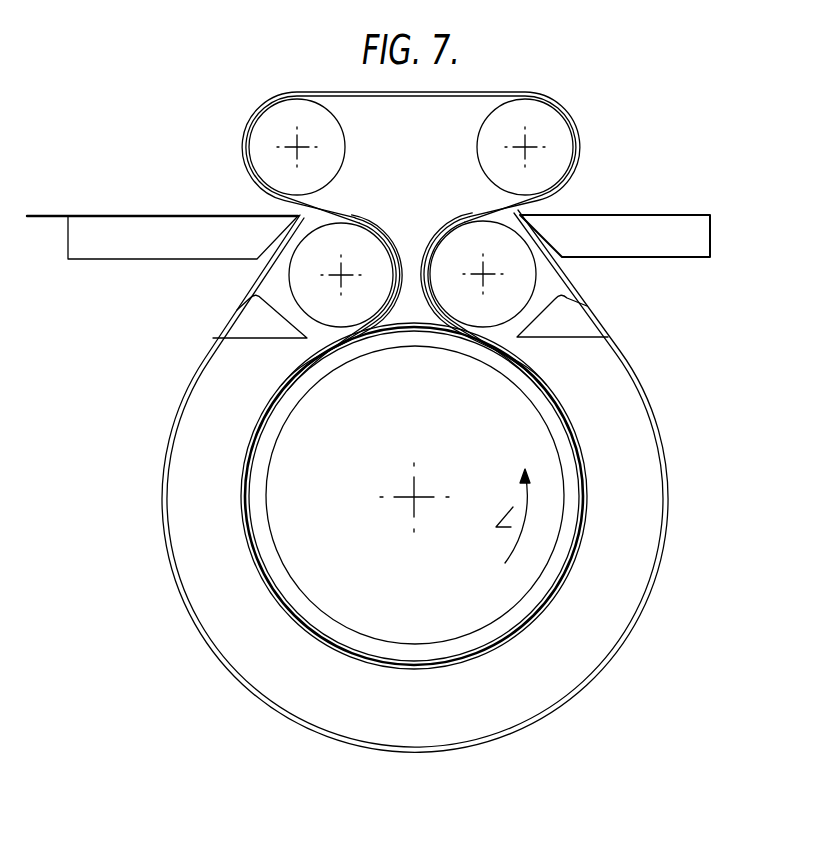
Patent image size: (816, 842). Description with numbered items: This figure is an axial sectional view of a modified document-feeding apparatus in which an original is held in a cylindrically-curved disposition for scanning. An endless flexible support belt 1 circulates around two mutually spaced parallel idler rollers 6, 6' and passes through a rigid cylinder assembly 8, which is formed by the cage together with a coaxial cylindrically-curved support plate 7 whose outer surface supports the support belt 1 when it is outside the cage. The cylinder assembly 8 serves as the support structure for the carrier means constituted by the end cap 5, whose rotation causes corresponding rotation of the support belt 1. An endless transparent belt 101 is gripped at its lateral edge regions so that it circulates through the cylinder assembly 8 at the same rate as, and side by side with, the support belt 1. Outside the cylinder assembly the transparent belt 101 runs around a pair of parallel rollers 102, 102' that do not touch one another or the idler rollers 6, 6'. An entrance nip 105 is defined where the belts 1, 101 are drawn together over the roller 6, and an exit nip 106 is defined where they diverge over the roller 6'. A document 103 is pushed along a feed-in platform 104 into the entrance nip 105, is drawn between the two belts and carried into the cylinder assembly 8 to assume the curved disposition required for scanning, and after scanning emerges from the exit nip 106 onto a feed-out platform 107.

The support belt 1 is at (657, 577).
The end cap 5 is at (568, 492).
The idler roller 6 is at (341, 259).
The idler roller 6' is at (482, 259).
The cylindrically-curved support plate 7 is at (657, 557).
The cylinder assembly 8 is at (615, 530).
The transparent belt 101 is at (345, 93).
The roller 102 is at (264, 147).
The roller 102' is at (562, 147).
The document 103 is at (55, 214).
The feed-in platform 104 is at (175, 228).
The entrance nip 105 is at (292, 222).
The exit nip 106 is at (502, 213).
The feed-out platform 107 is at (622, 232).